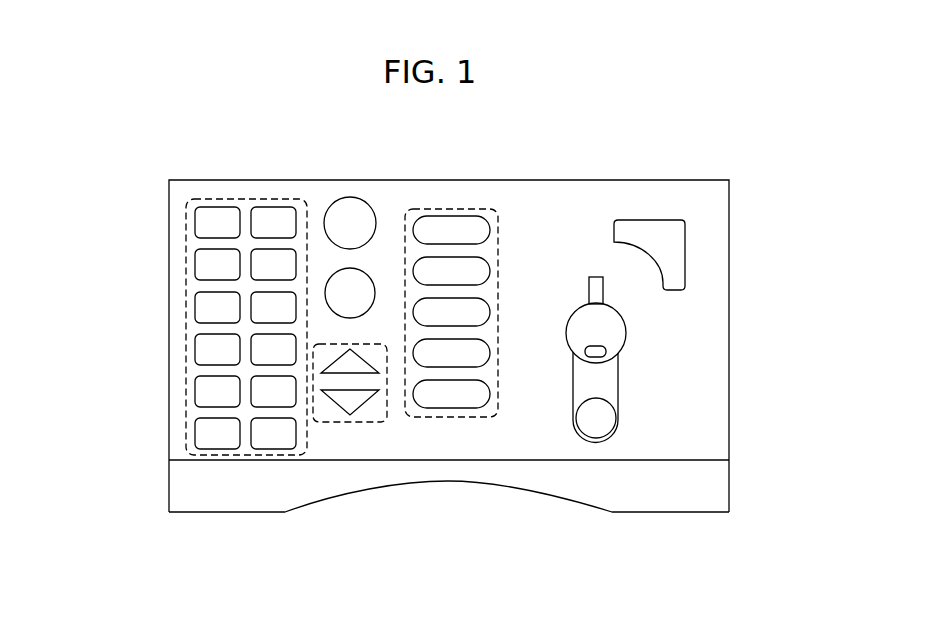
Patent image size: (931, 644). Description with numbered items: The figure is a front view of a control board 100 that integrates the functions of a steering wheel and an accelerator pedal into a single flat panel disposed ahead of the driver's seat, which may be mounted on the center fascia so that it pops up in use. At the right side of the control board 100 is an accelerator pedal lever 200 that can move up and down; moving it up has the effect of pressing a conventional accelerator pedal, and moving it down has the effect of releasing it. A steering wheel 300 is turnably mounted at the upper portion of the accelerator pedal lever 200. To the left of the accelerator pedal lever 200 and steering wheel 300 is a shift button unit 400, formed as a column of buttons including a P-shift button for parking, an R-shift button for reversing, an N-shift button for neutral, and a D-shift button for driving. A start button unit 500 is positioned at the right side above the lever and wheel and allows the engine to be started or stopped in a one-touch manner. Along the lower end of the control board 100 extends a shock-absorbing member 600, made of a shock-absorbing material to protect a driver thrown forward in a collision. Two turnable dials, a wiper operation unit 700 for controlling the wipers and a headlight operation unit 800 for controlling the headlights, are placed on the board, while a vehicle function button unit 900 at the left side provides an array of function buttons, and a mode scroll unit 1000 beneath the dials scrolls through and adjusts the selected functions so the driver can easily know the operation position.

The control board 100 is at (553, 225).
The accelerator pedal lever 200 is at (600, 387).
The steering wheel 300 is at (608, 330).
The shift button unit 400 is at (452, 417).
The start button unit 500 is at (653, 235).
The shock-absorbing member 600 is at (659, 485).
The wiper operation unit 700 is at (340, 213).
The headlight operation unit 800 is at (362, 288).
The vehicle function button unit 900 is at (186, 325).
The mode scroll unit 1000 is at (350, 422).